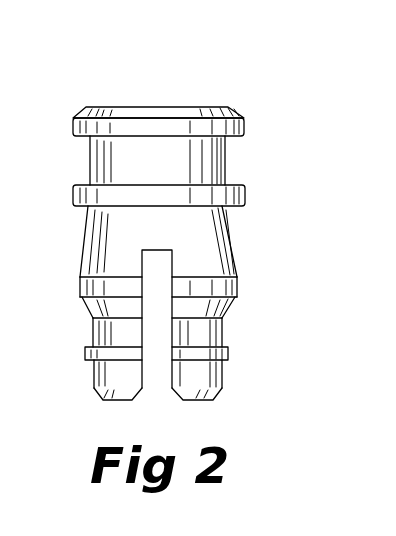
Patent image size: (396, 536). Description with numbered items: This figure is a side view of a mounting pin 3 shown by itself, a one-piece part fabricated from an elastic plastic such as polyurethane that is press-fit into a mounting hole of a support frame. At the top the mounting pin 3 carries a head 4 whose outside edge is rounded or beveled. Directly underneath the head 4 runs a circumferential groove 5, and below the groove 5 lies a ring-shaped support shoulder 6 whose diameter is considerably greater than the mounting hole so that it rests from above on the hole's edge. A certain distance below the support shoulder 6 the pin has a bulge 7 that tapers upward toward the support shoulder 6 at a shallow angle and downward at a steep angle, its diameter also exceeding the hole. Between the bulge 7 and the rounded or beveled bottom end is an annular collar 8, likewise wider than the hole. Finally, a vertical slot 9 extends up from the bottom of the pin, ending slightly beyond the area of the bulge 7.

The mounting pin 3 is at (114, 70).
The head 4 is at (150, 110).
The circumferential groove 5 is at (98, 162).
The ring-shaped support shoulder 6 is at (245, 195).
The bulge 7 is at (81, 283).
The annular collar 8 is at (229, 353).
The vertical slot 9 is at (168, 327).